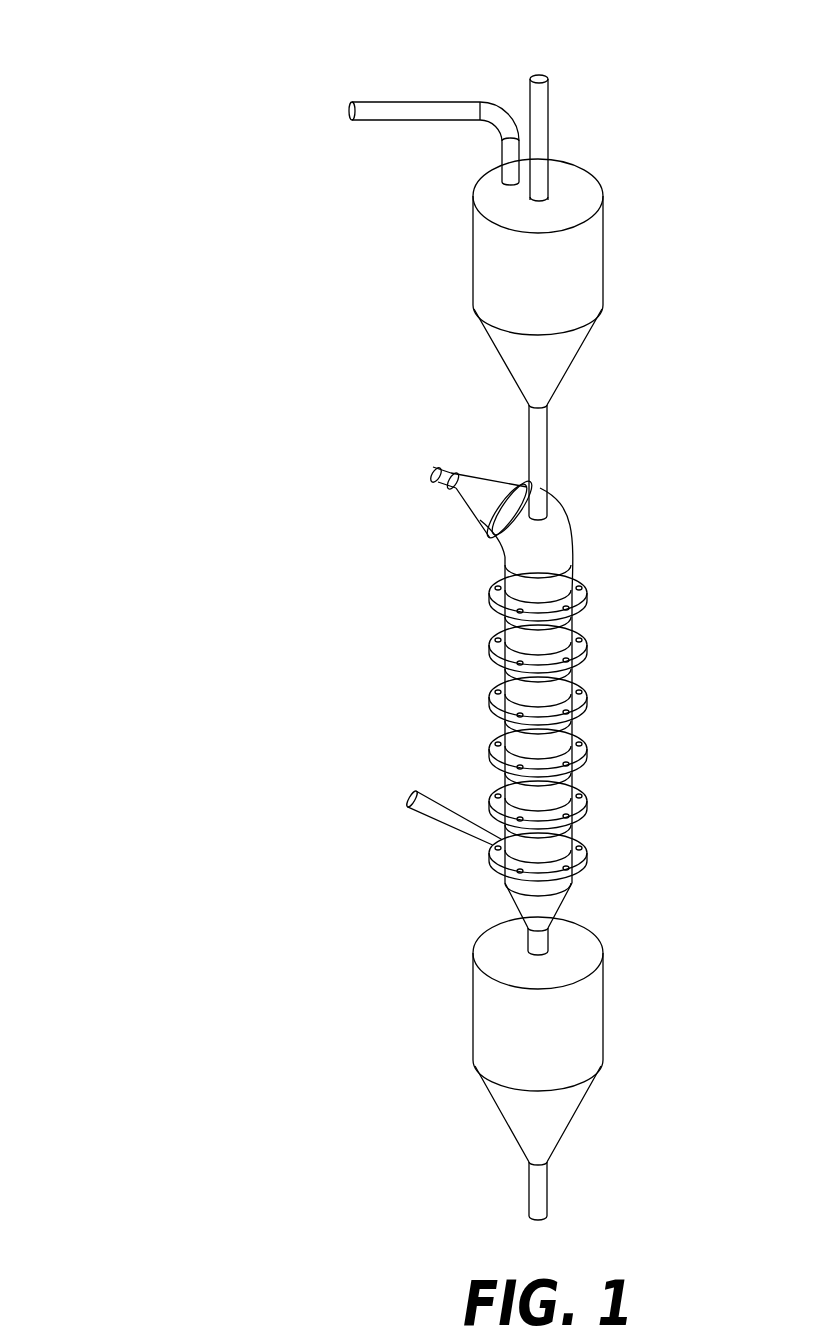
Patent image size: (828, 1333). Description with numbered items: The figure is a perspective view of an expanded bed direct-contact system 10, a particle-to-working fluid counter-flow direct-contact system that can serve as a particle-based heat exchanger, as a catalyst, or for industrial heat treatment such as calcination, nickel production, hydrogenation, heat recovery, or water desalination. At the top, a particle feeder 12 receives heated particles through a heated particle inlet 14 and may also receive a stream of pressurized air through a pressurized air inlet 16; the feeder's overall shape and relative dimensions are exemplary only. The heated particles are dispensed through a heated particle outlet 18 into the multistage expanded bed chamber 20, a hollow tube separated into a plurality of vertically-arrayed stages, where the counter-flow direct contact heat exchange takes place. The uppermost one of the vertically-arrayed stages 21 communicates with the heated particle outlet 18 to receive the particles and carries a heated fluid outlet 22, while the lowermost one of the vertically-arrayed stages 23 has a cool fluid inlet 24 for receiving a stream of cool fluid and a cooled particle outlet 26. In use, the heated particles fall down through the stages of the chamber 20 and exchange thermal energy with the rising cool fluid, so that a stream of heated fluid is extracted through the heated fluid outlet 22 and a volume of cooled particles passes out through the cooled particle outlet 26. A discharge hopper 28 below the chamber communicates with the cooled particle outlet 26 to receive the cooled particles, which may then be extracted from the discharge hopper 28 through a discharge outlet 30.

The expanded bed direct-contact system 10 is at (150, 70).
The particle feeder 12 is at (605, 255).
The heated particle inlet 14 is at (537, 110).
The pressurized air inlet 16 is at (363, 110).
The heated particle outlet 18 is at (548, 465).
The multistage expanded bed chamber 20 is at (563, 700).
The uppermost vertically-arrayed stage 21 is at (560, 593).
The heated fluid outlet 22 is at (432, 473).
The lowermost vertically-arrayed stage 23 is at (563, 855).
The cool fluid inlet 24 is at (415, 802).
The cooled particle outlet 26 is at (540, 942).
The discharge hopper 28 is at (492, 1038).
The discharge outlet 30 is at (537, 1197).